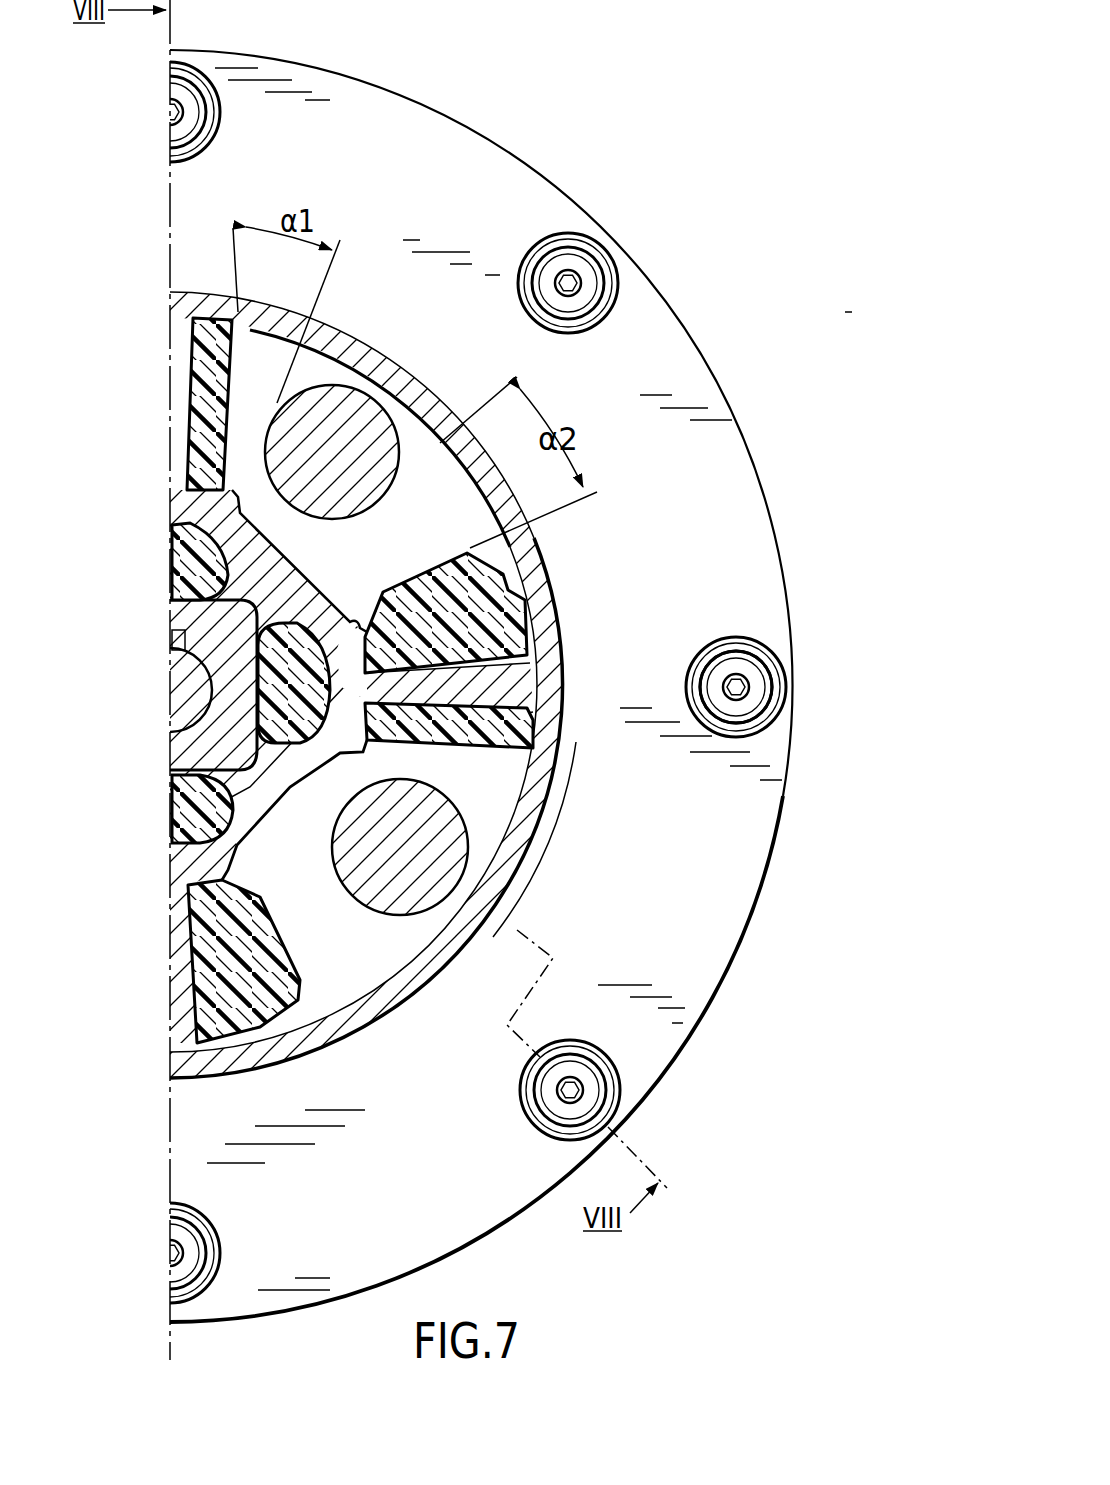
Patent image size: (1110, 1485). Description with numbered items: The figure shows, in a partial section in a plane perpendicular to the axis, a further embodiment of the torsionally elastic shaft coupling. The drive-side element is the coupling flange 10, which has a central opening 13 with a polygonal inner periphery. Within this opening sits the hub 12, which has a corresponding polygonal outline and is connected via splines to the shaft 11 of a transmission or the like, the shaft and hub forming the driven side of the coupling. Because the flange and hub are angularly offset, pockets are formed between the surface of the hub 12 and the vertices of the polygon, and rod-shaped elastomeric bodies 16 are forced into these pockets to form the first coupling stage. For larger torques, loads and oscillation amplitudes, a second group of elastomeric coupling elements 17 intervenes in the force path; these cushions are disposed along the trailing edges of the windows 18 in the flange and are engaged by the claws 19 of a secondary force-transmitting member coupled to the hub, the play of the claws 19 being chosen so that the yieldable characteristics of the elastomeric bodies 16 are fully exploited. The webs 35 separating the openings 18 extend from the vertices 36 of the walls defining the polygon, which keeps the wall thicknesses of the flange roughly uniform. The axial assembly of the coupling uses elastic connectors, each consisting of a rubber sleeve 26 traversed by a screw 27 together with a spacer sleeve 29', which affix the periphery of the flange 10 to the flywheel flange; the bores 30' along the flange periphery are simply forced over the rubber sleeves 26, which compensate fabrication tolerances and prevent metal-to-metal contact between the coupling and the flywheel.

The coupling flange 10 is at (450, 133).
The shaft 11 is at (187, 672).
The hub 12 is at (197, 740).
The central opening 13 is at (267, 757).
The elastomeric bodies 16 is at (283, 643).
The elastomeric coupling elements 17 is at (508, 613).
The windows 18 is at (362, 685).
The claws 19 is at (358, 480).
The rubber sleeve 26 is at (755, 643).
The screw 27 is at (575, 1090).
The spacer sleeve 29' is at (778, 689).
The bores 30' is at (608, 275).
The webs 35 is at (490, 675).
The vertices 36 is at (348, 662).